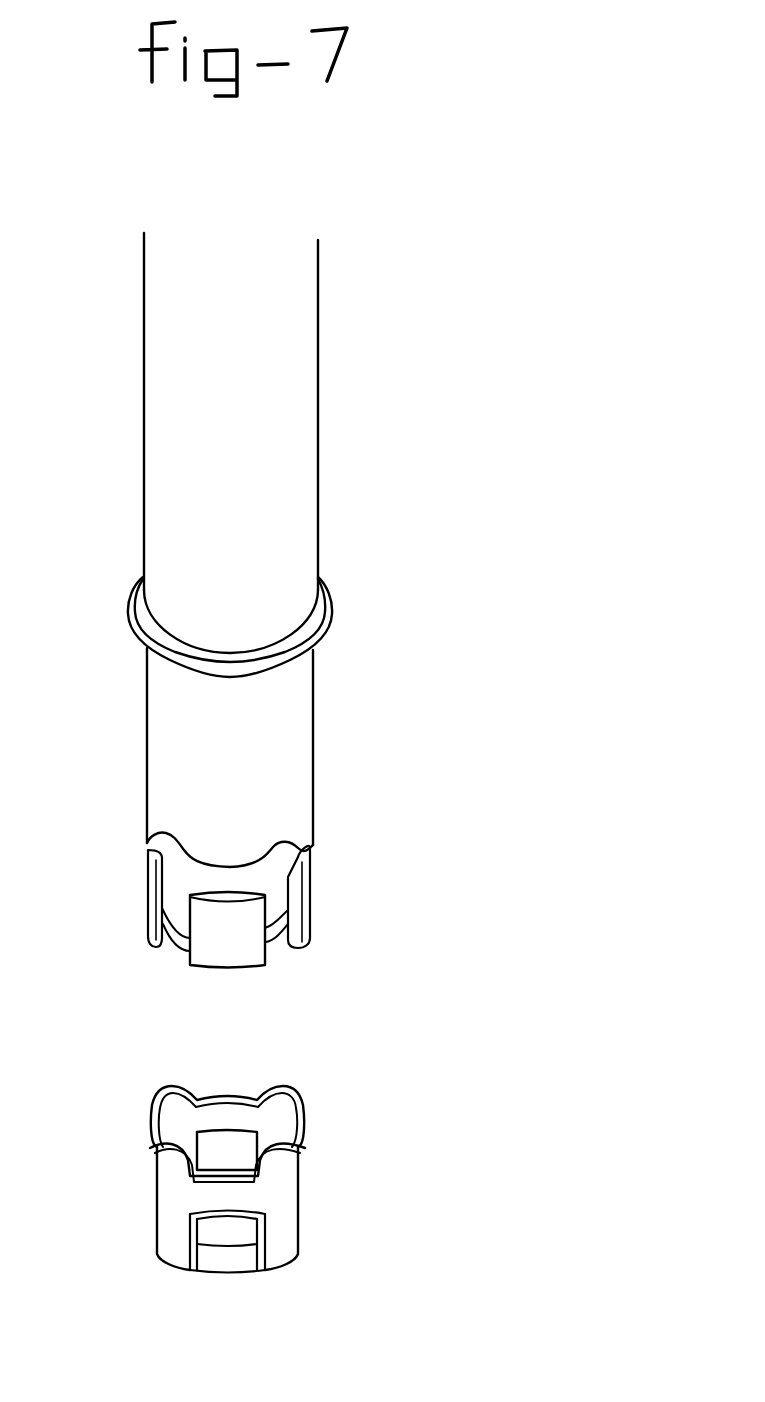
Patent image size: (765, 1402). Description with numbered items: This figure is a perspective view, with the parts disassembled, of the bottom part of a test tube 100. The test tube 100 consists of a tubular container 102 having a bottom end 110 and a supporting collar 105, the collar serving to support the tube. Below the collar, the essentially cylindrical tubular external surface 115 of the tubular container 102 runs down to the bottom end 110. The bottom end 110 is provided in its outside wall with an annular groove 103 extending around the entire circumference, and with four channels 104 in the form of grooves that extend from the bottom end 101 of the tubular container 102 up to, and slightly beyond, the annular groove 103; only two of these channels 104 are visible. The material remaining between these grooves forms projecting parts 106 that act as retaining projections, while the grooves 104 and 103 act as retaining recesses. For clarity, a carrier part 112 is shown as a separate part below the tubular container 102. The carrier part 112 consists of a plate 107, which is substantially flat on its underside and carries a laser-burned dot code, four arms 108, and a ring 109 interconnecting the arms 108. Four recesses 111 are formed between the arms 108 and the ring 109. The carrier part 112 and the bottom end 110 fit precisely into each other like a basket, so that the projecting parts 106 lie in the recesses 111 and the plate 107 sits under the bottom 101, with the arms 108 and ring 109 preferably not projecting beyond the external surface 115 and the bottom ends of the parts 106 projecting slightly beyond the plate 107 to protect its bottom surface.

The test tube 100 is at (340, 347).
The bottom end of the tubular container 101 is at (265, 943).
The tubular container 102 is at (303, 478).
The annular groove 103 is at (150, 862).
The channels 104 is at (170, 917).
The supporting collar 105 is at (327, 630).
The projecting parts 106 is at (208, 955).
The plate 107 is at (236, 1260).
The arms 108 is at (280, 1233).
The ring 109 is at (228, 1103).
The bottom end 110 is at (330, 882).
The recesses 111 is at (207, 1153).
The carrier part 112 is at (345, 1172).
The tubular external surface 115 is at (295, 745).